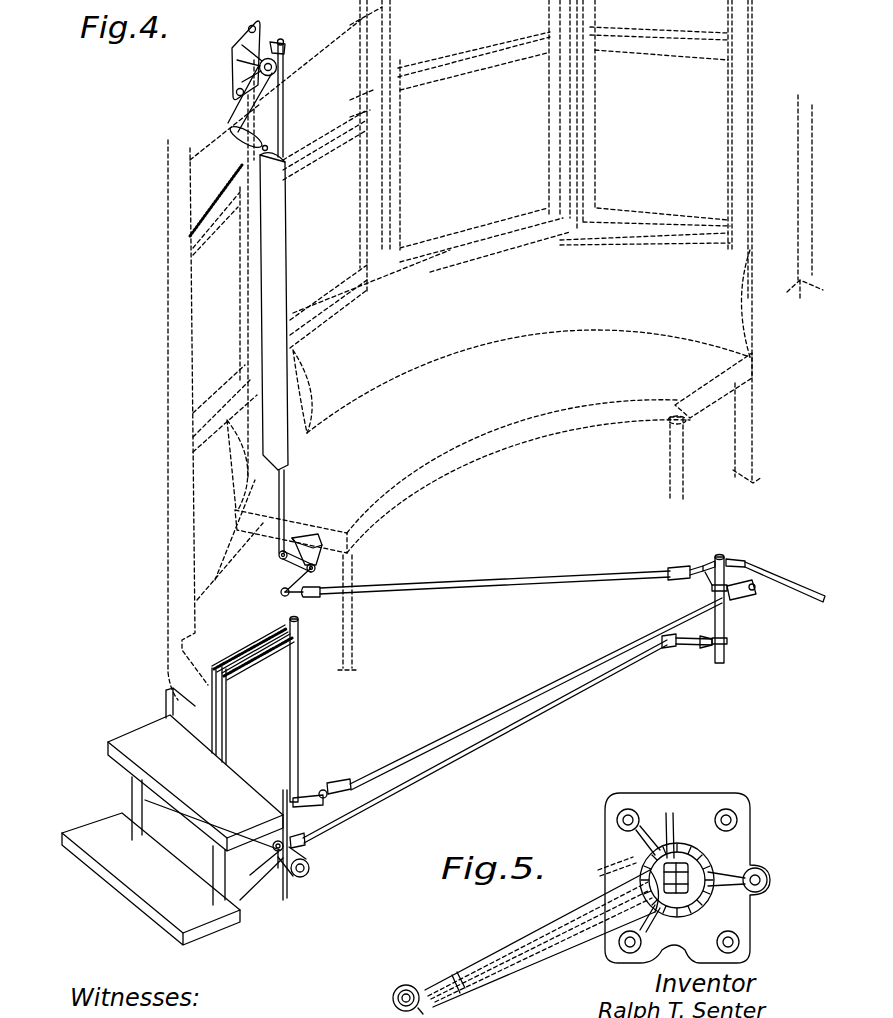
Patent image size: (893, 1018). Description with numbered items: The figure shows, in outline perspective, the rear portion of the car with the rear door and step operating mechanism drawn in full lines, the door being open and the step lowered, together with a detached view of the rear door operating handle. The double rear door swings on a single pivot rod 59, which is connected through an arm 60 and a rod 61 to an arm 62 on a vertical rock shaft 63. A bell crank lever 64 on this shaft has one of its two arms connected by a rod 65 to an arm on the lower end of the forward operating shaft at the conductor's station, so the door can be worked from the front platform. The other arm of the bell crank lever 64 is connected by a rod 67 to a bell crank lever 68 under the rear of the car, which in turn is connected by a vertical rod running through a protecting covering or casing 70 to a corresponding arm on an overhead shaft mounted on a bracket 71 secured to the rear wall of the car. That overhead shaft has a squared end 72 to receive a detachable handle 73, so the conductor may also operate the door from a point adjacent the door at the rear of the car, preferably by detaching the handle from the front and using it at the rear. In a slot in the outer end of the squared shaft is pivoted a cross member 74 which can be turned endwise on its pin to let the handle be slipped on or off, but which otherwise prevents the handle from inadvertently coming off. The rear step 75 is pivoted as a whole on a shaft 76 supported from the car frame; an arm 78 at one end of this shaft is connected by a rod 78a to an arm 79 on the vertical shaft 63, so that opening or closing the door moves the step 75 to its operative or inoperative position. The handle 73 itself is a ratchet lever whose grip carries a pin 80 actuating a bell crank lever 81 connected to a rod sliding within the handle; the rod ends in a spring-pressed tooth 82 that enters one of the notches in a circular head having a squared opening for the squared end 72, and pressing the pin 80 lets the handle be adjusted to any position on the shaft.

In FIG. 4, the pivot rod 59 is at (299, 753).
In FIG. 4, the arm 60 is at (308, 800).
In FIG. 4, the rod 61 is at (292, 490).
In FIG. 4, the arm 62 is at (736, 602).
In FIG. 4, the vertical rock shaft 63 is at (726, 658).
In FIG. 4, the bell crank lever 64 is at (708, 578).
In FIG. 4, the rod 65 is at (797, 590).
In FIG. 4, the rod 67 is at (552, 588).
In FIG. 4, the bell crank lever 68 is at (303, 563).
In FIG. 4, the protecting covering or casing 70 is at (294, 252).
In FIG. 4, the bracket 71 is at (254, 40).
In FIG. 5, the bracket 71 is at (710, 804).
In FIG. 4, the squared end 72 is at (280, 70).
In FIG. 5, the squared end 72 is at (703, 884).
In FIG. 4, the detachable handle 73 is at (237, 110).
In FIG. 5, the detachable handle 73 is at (440, 975).
In FIG. 5, the cross member 74 is at (700, 873).
In FIG. 4, the rear step 75 is at (136, 785).
In FIG. 4, the shaft 76 is at (309, 870).
In FIG. 4, the arm 78 is at (279, 870).
In FIG. 4, the rod 78a is at (455, 766).
In FIG. 4, the arm 79 is at (700, 644).
In FIG. 5, the pin 80 is at (405, 988).
In FIG. 5, the bell crank lever 81 is at (432, 1009).
In FIG. 5, the tooth 82 is at (606, 880).